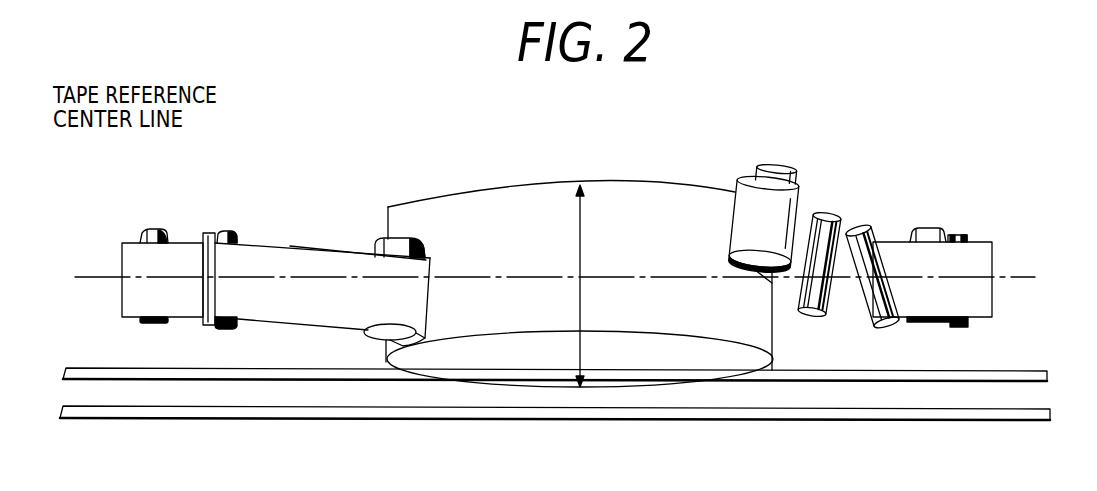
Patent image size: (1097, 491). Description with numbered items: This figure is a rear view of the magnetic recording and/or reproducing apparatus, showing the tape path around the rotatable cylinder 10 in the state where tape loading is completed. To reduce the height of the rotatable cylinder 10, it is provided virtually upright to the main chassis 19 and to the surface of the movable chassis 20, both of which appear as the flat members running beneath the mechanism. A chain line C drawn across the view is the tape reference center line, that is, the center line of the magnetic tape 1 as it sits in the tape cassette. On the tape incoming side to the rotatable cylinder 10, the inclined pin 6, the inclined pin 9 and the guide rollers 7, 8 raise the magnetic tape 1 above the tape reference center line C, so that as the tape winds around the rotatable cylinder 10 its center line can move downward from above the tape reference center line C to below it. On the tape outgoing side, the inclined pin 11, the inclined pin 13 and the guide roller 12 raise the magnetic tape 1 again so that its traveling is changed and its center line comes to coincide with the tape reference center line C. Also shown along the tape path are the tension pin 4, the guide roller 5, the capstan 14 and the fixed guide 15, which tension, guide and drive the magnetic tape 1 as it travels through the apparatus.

The magnetic tape 1 is at (983, 258).
The tension pin 4 is at (955, 235).
The guide roller 5 is at (930, 227).
The inclined pin 6 is at (853, 230).
The guide roller 7 is at (822, 215).
The guide roller 8 is at (777, 167).
The inclined pin 9 is at (750, 180).
The rotatable cylinder 10 is at (621, 200).
The inclined pin 11 is at (425, 258).
The guide roller 12 is at (397, 237).
The inclined pin 13 is at (230, 235).
The capstan 14 is at (207, 235).
The fixed guide 15 is at (150, 233).
The main chassis 19 is at (1035, 422).
The movable chassis 20 is at (1027, 373).
The tape reference center line C is at (103, 277).